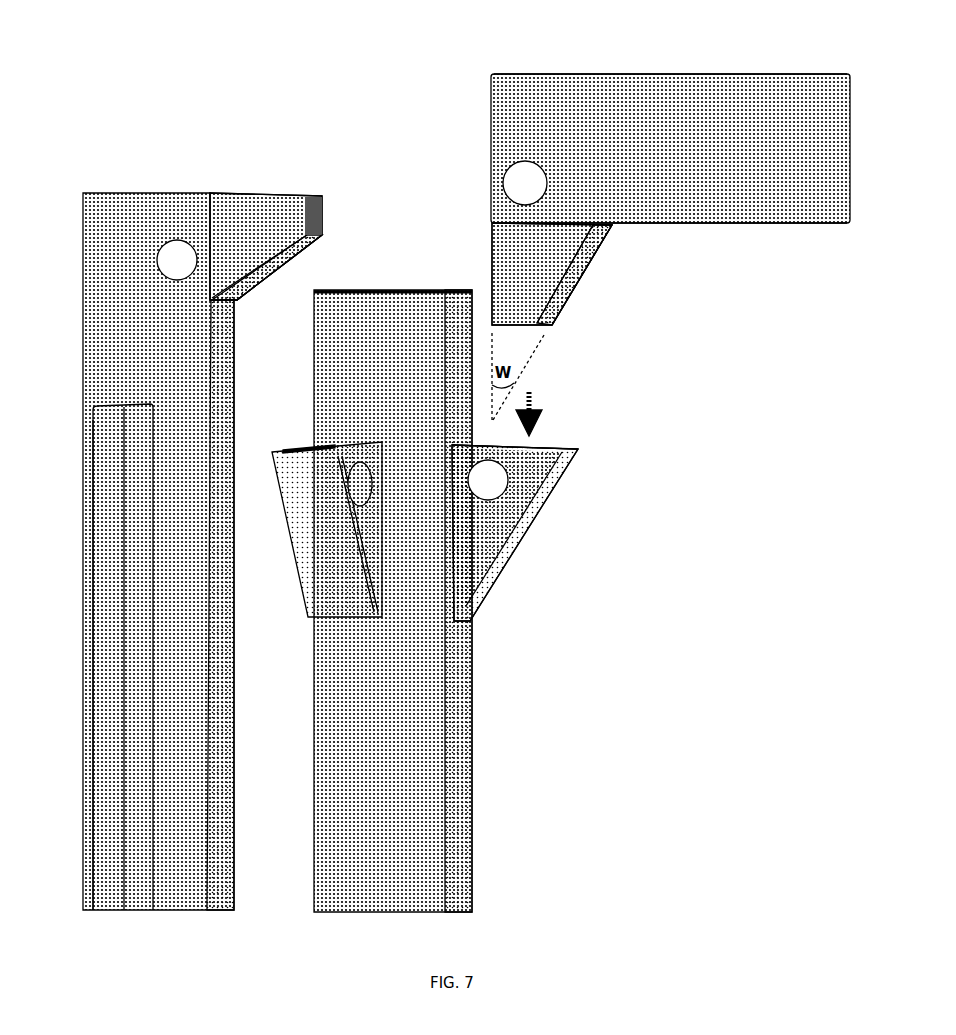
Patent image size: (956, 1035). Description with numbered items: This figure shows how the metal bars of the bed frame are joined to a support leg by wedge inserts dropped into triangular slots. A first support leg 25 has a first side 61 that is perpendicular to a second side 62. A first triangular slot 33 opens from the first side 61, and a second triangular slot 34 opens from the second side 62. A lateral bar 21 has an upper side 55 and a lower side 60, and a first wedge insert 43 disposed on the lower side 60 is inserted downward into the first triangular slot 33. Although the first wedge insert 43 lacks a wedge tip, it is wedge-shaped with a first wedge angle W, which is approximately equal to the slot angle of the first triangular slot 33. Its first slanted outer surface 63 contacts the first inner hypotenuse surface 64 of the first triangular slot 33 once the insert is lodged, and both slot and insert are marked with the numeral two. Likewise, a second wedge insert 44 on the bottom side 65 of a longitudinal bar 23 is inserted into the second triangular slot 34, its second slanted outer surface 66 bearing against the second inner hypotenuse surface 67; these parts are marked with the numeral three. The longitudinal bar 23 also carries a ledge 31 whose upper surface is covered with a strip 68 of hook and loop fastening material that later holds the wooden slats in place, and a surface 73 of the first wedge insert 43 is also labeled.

The lateral bar 21 is at (616, 72).
The longitudinal bar 23 is at (130, 192).
The first support leg 25 is at (402, 288).
The ledge 31 is at (121, 405).
The first triangular slot 33 is at (535, 517).
The second triangular slot 34 is at (280, 447).
The first wedge insert 43 is at (575, 291).
The second wedge insert 44 is at (282, 192).
The upper side 55 is at (677, 71).
The lower side 60 is at (661, 228).
The first side 61 is at (458, 601).
The second side 62 is at (380, 341).
The first slanted outer surface 63 is at (592, 259).
The first inner hypotenuse surface 64 is at (559, 445).
The bottom side 65 is at (220, 605).
The second slanted outer surface 66 is at (271, 276).
The second inner hypotenuse surface 67 is at (305, 446).
The strip of hook and loop fastening material 68 is at (95, 441).
The face of first wedge insert 73 is at (556, 274).